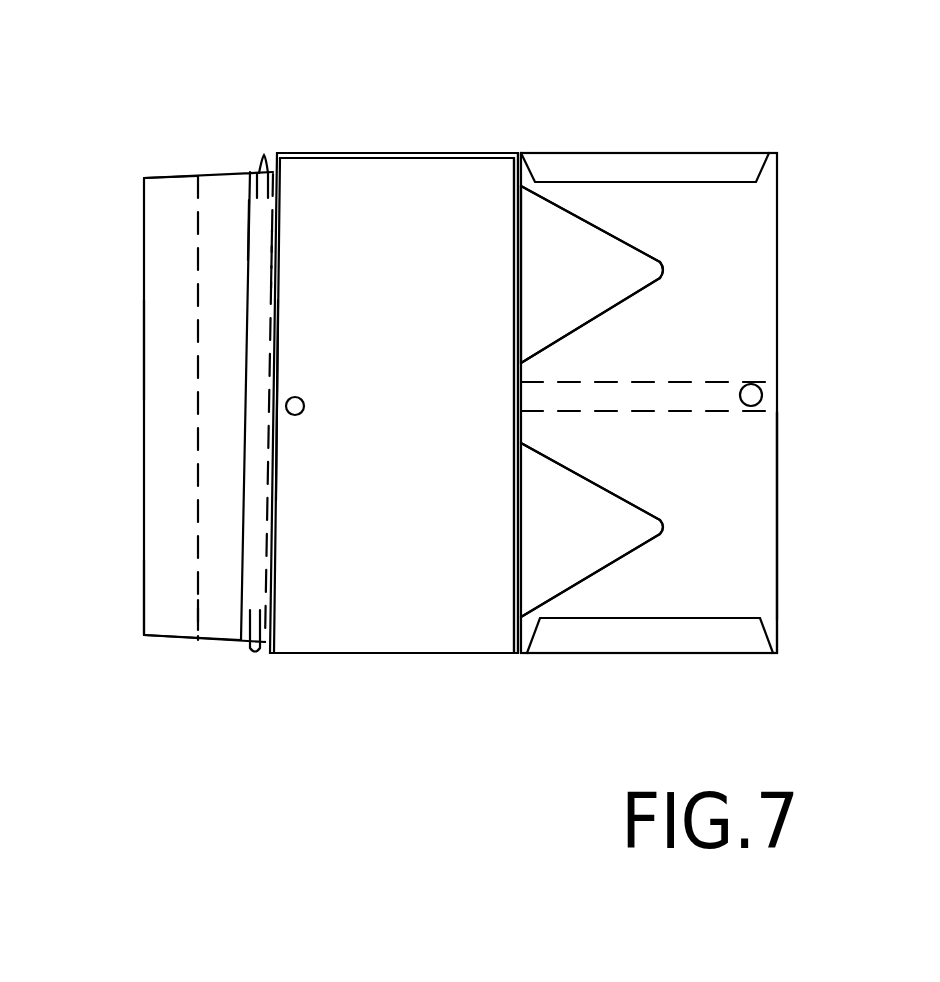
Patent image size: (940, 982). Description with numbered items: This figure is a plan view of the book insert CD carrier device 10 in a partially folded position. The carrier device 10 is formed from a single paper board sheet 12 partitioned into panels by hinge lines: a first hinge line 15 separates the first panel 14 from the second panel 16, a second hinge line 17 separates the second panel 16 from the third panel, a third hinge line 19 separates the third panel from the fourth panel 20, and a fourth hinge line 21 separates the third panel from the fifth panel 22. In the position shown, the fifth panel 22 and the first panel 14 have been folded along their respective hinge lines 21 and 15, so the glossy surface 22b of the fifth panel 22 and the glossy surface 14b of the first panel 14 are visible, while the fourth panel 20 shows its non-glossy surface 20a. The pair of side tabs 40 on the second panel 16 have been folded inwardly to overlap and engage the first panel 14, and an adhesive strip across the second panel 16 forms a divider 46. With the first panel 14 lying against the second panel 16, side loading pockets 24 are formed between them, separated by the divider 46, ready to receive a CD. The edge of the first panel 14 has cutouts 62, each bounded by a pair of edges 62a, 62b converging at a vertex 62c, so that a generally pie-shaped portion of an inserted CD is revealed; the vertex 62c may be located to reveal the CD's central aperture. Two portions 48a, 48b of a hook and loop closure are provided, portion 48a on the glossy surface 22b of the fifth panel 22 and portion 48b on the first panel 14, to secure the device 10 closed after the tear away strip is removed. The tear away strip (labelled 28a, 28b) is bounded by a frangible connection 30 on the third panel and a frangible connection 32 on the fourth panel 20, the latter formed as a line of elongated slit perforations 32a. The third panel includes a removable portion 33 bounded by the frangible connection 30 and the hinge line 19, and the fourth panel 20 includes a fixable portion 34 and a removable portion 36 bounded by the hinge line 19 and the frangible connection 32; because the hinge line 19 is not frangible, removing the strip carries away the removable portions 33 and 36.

The book insert CD carrier device 10 is at (325, 705).
The paper board sheet 12 is at (500, 654).
The first panel 14 is at (743, 272).
The glossy surface of first panel 14b is at (704, 485).
The first hinge line 15 is at (778, 520).
The second panel 16 is at (582, 253).
The second hinge line 17 is at (517, 552).
The third hinge line 19 is at (240, 570).
The fourth panel 20 is at (175, 507).
The non-glossy surface of fourth panel 20a is at (166, 378).
The fourth hinge line 21 is at (390, 653).
The fifth panel 22 is at (371, 432).
The glossy surface of fifth panel 22b is at (375, 528).
The pockets 24 is at (542, 293).
The upper hinge 28a is at (264, 152).
The lower hinge 28b is at (250, 652).
The frangible connection 30 is at (262, 262).
The frangible connection 32 is at (198, 220).
The elongated slit perforations 32a is at (198, 300).
The removable portion 33 is at (250, 242).
The fixable portion 34 is at (165, 597).
The removable portion 36 is at (225, 618).
The side tabs 40 is at (697, 168).
The divider 46 is at (673, 381).
The hook and loop closure portion 48a is at (298, 397).
The hook and loop closure portion 48b is at (763, 395).
The cutouts 62 is at (610, 233).
The cutout edge 62a is at (603, 318).
The cutout edge 62b is at (628, 250).
The vertex 62c is at (667, 270).